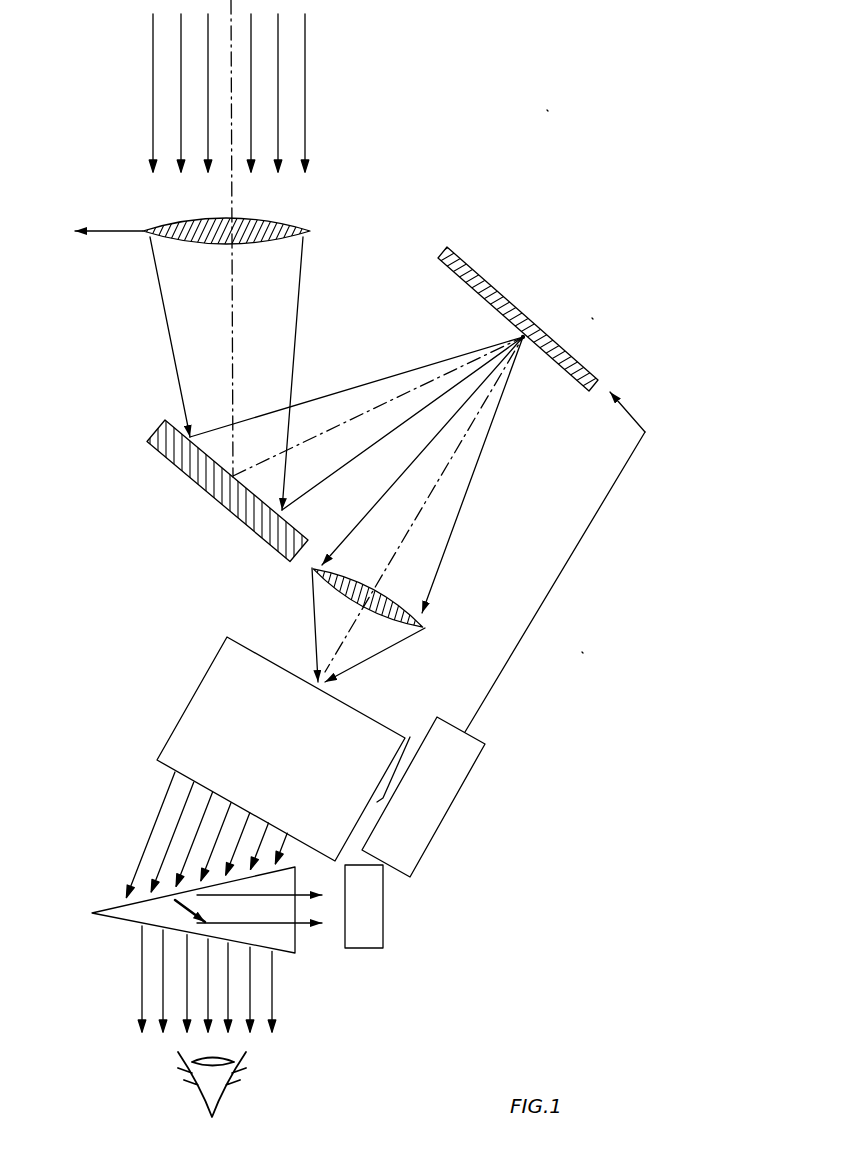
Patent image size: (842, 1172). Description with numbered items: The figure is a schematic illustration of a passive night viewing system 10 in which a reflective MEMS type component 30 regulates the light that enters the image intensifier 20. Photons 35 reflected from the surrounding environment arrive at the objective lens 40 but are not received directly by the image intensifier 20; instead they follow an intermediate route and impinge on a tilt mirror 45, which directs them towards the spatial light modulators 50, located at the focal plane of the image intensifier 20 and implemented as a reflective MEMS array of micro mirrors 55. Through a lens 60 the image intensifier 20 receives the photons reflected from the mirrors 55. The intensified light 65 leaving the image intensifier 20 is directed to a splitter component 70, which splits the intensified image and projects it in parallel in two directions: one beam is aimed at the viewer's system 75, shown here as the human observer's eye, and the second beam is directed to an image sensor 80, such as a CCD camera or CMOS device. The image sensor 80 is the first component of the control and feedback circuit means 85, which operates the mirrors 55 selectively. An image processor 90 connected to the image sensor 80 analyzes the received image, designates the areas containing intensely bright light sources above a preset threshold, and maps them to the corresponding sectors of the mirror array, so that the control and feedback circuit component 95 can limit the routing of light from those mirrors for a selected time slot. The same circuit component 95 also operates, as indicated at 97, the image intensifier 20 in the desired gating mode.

The passive night viewing system 10 is at (547, 110).
The image intensifier 20 is at (200, 680).
The reflective MEMS type component 30 is at (592, 318).
The photons 35 is at (150, 72).
The objective lens 40 is at (128, 231).
The tilt mirror 45 is at (180, 478).
The spatial light modulators 50 is at (477, 287).
The micro mirrors 55 is at (530, 363).
The lens 60 is at (425, 628).
The intensified light 65 is at (165, 805).
The splitter component 70 is at (105, 897).
The viewer's system 75 is at (128, 1080).
The image sensor 80 is at (385, 914).
The control and feedback circuit means 85 is at (582, 652).
The image processor 90 is at (450, 813).
The control and feedback circuit component 95 is at (607, 500).
The gating control connection 97 is at (410, 737).